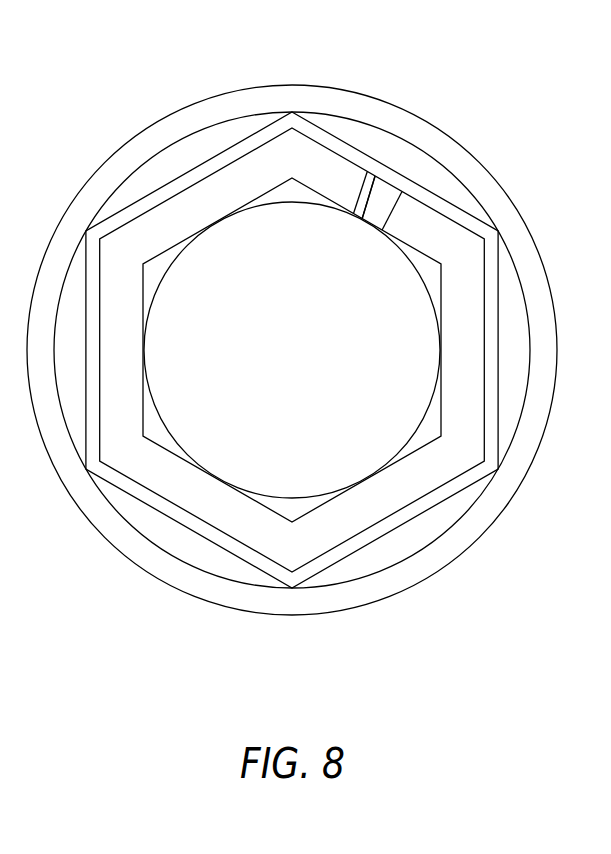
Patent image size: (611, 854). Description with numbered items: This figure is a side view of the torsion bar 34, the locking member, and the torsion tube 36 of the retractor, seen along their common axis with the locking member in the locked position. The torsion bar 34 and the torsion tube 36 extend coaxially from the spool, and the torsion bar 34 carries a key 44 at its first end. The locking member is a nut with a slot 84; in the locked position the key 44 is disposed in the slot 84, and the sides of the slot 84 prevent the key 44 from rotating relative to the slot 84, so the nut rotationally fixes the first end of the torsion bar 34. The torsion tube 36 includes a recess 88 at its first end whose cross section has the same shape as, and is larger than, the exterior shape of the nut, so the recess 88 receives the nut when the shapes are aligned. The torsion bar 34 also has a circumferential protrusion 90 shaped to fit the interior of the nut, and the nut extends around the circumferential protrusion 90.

The torsion bar 34 is at (425, 290).
The torsion tube 36 is at (479, 171).
The key 44 is at (436, 155).
The slot 84 is at (323, 125).
The recess 88 is at (193, 165).
The circumferential protrusion 90 is at (442, 410).